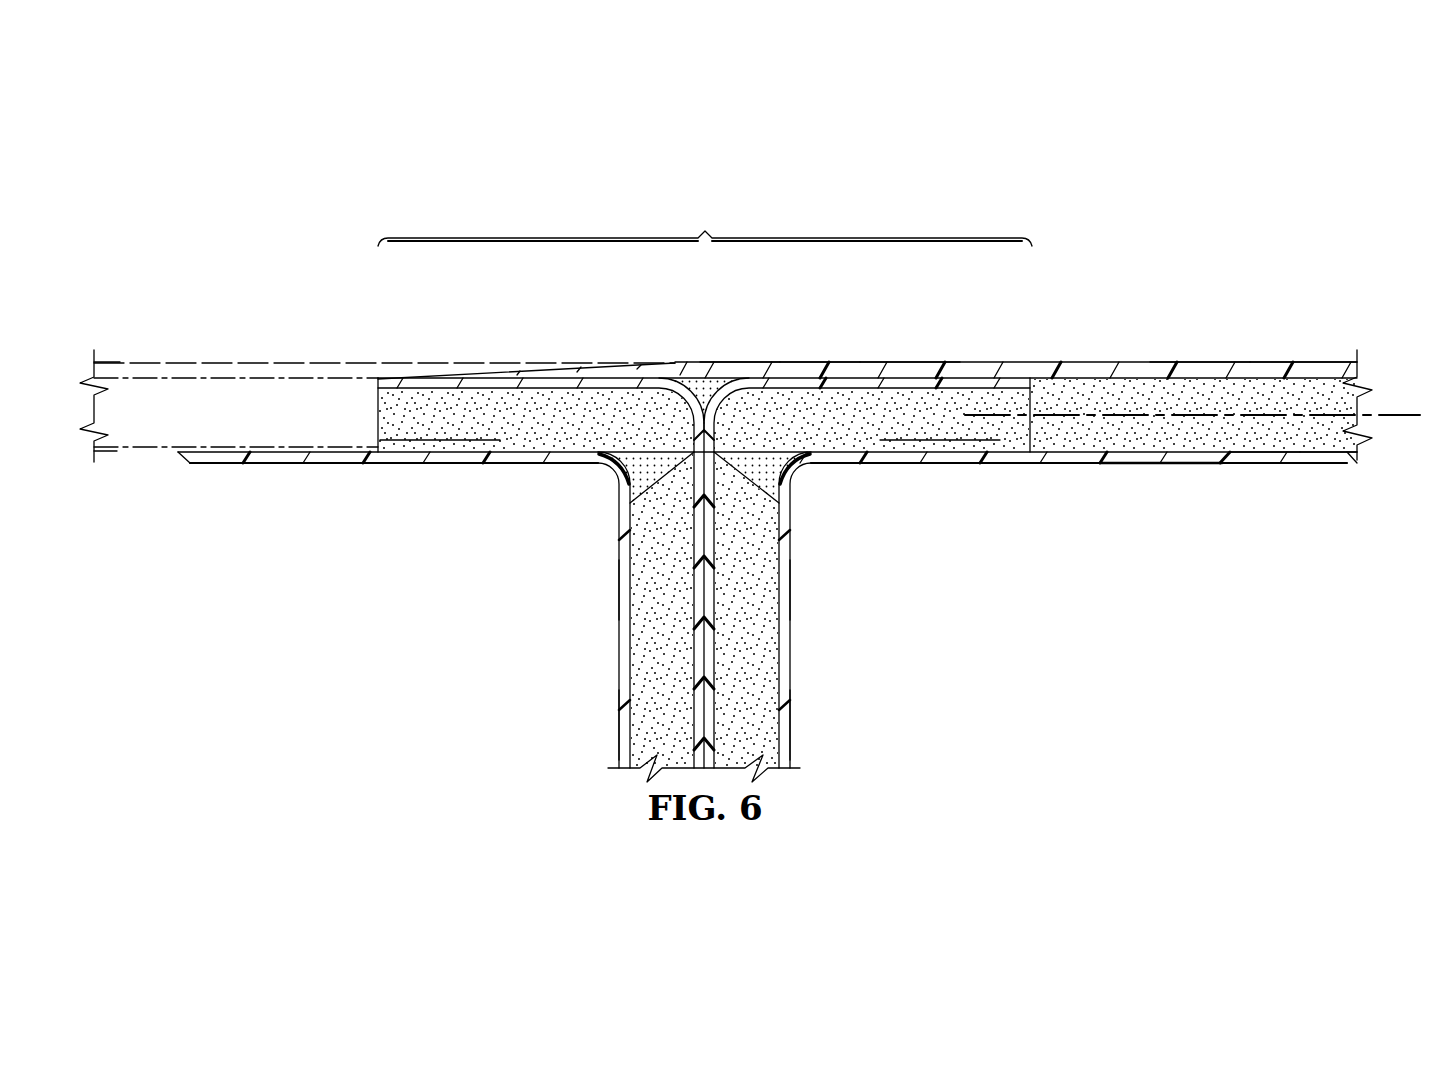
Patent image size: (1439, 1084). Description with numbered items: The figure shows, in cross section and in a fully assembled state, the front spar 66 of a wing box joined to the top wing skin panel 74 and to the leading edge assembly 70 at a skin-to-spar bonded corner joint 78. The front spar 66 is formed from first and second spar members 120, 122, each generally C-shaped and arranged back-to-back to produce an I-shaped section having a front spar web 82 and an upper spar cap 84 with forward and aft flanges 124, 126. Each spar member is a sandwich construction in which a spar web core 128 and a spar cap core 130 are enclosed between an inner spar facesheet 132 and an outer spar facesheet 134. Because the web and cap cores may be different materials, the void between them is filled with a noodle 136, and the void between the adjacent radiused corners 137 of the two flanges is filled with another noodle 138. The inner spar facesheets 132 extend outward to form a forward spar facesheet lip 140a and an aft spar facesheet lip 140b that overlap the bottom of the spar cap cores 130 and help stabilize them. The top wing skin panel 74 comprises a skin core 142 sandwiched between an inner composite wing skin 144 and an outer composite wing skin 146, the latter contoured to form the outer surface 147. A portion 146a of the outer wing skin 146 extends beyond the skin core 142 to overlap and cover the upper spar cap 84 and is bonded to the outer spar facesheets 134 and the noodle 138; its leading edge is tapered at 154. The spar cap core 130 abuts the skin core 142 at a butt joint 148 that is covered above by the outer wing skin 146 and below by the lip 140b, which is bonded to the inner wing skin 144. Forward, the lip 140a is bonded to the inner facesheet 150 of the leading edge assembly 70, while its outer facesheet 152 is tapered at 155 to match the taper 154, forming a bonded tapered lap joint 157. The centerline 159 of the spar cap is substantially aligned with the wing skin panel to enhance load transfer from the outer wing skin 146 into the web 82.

The front spar 66 is at (812, 715).
The leading edge assembly 70 is at (293, 344).
The top wing skin panel 74 is at (1118, 341).
The skin-to-spar bonded corner joint 78 is at (758, 316).
The front spar web 82 is at (596, 577).
The upper spar cap 84 is at (590, 351).
The first spar member 120 is at (596, 715).
The second spar member 122 is at (813, 577).
The flange 124 is at (486, 468).
The flange 126 is at (934, 468).
The spar web core 128 is at (640, 630).
The spar cap core 130 is at (621, 404).
The inner spar facesheet 132 is at (420, 463).
The outer spar facesheet 134 is at (396, 376).
The noodle 136 is at (612, 492).
The radiused corner 137 is at (686, 410).
The noodle 138 is at (708, 382).
The forward spar facesheet lip 140a is at (285, 463).
The aft spar facesheet lip 140b is at (1148, 463).
The skin core 142 is at (1258, 456).
The inner composite wing skin 144 is at (1346, 456).
The outer composite wing skin 146 is at (1338, 361).
The outer wing skin portion 146a is at (705, 224).
The outer surface 147 is at (1218, 360).
The joint 148 is at (1040, 394).
The inner facesheet of leading edge assembly 150 is at (121, 456).
The outer facesheet of leading edge assembly 152 is at (133, 358).
The taper of outer wing skin 154 is at (482, 344).
The taper of leading edge outer facesheet 155 is at (440, 367).
The tapered lap joint 157 is at (533, 347).
The centerline 159 is at (1395, 412).